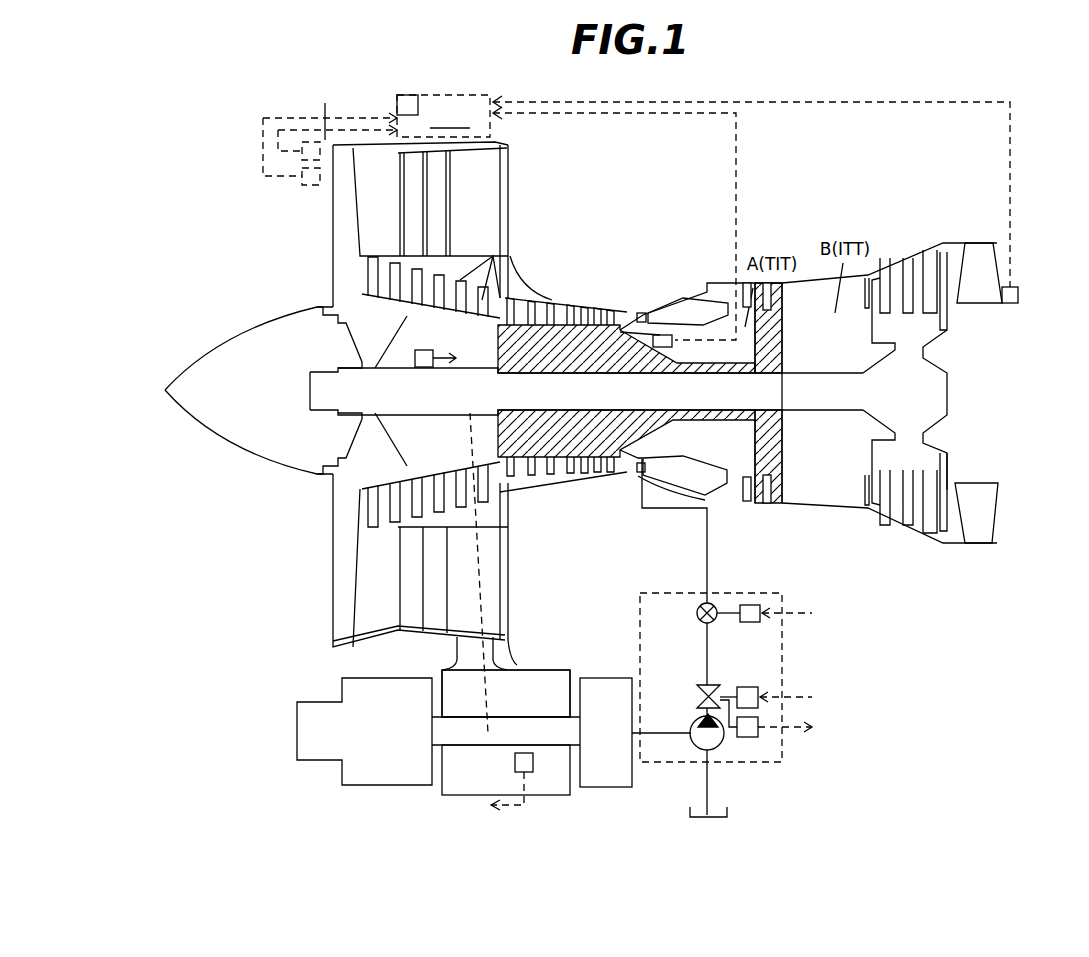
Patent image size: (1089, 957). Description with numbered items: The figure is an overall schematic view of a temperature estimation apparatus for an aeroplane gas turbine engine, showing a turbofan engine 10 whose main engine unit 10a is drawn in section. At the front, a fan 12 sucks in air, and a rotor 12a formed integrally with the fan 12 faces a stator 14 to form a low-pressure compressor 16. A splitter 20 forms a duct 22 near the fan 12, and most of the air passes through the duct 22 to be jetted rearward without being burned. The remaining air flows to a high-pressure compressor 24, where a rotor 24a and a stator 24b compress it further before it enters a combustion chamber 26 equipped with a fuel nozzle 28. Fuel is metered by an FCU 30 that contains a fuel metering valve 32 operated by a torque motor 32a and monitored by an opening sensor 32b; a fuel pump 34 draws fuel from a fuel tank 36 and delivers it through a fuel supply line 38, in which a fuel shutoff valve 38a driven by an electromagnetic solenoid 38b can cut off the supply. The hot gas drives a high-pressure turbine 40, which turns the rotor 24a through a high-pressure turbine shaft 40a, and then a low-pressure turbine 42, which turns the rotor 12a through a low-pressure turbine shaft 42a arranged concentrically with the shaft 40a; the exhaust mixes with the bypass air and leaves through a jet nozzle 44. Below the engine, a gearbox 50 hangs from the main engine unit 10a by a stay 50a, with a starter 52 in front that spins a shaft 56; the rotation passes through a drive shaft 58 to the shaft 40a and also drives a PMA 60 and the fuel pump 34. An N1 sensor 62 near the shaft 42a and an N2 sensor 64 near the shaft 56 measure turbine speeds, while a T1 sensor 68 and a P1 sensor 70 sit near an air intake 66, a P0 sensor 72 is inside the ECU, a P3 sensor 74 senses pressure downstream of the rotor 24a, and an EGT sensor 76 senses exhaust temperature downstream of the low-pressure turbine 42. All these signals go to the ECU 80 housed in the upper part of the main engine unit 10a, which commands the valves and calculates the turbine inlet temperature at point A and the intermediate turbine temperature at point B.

The turbofan engine 10 is at (549, 215).
The main engine unit 10a is at (521, 552).
The fan 12 is at (330, 537).
The rotor 12a is at (418, 470).
The stator 14 is at (372, 528).
The low-pressure compressor 16 is at (420, 328).
The splitter 20 is at (508, 263).
The duct 22 is at (459, 206).
The high-pressure compressor 24 is at (600, 478).
The rotor 24a is at (626, 335).
The stator 24b is at (563, 480).
The combustion chamber 26 is at (664, 302).
The fuel nozzle 28 is at (640, 313).
The fuel control unit 30 is at (640, 636).
The fuel metering valve 32 is at (708, 684).
The torque motor 32a is at (789, 685).
The opening sensor 32b is at (752, 737).
The fuel pump 34 is at (693, 724).
The fuel tank 36 is at (690, 812).
The fuel supply line 38 is at (706, 640).
The fuel shutoff valve 38a is at (697, 613).
The electromagnetic solenoid 38b is at (750, 623).
The high-pressure turbine 40 is at (782, 320).
The high-pressure turbine shaft 40a is at (468, 415).
The low-pressure turbine 42 is at (874, 340).
The low-pressure turbine shaft 42a is at (564, 402).
The jet nozzle 44 is at (998, 382).
The accessory drive gearbox 50 is at (523, 668).
The stay 50a is at (457, 648).
The integrated starter/generator 52 is at (368, 745).
The shaft 56 is at (465, 748).
The drive shaft 58 is at (490, 693).
The permanent magnet alternator 60 is at (594, 745).
The N1 sensor 62 is at (415, 358).
The N2 sensor 64 is at (534, 763).
The air intake 66 is at (327, 110).
The T1 sensor 68 is at (305, 142).
The P1 sensor 70 is at (312, 186).
The P0 sensor 72 is at (397, 101).
The P3 sensor 74 is at (672, 344).
The EGT sensor 76 is at (1018, 295).
The electronic control unit 80 is at (447, 95).